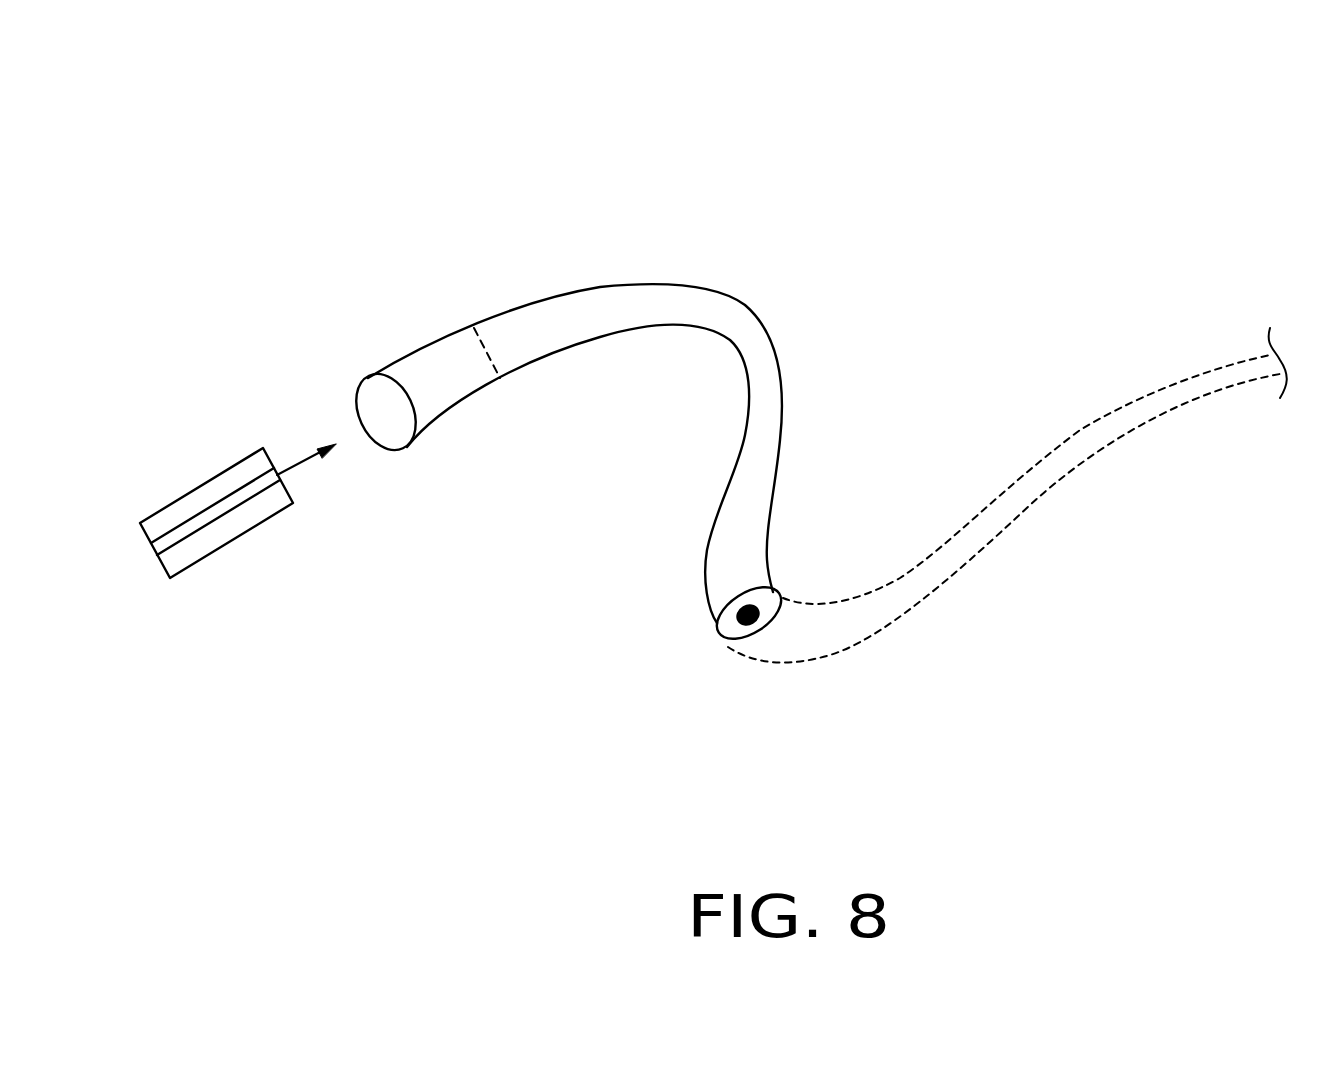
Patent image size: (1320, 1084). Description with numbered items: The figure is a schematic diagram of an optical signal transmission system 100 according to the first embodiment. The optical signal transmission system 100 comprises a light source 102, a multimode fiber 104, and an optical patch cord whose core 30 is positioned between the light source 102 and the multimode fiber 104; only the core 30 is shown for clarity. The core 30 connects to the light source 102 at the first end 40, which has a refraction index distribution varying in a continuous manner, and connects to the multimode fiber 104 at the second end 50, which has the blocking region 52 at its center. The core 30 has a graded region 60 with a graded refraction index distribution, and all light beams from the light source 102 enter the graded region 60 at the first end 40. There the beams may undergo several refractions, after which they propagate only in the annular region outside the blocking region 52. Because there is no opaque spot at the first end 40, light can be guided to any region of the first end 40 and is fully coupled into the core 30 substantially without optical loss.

The optical signal transmission system 100 is at (840, 215).
The core 30 is at (773, 344).
The first end 40 is at (370, 405).
The graded region 60 is at (455, 357).
The second end 50 is at (732, 630).
The blocking region 52 is at (758, 606).
The light source 102 is at (200, 485).
The multimode fiber 104 is at (1010, 518).